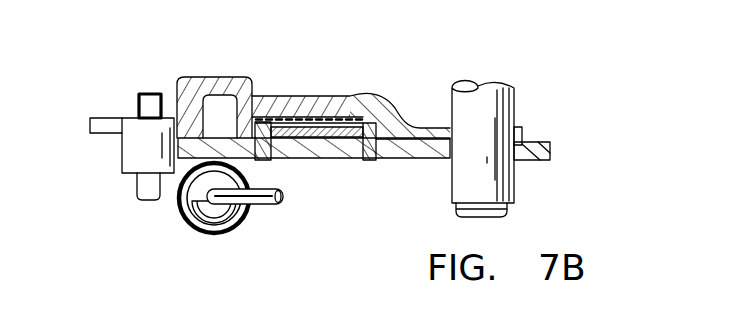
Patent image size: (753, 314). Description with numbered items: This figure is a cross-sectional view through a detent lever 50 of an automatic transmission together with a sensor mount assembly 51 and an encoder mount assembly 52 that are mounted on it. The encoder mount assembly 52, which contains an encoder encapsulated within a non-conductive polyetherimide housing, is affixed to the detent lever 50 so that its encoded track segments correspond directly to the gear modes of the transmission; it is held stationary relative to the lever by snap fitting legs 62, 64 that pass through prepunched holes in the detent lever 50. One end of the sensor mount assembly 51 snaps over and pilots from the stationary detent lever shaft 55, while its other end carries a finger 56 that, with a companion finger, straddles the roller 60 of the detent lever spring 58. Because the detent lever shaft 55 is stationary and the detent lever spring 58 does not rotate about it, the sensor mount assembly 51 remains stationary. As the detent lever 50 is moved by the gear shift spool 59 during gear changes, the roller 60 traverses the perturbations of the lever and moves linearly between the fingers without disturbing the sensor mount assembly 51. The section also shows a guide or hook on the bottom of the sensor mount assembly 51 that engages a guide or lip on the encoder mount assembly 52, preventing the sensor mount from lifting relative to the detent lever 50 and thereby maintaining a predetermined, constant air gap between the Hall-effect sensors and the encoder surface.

The detent lever 50 is at (528, 160).
The sensor mount assembly 51 is at (223, 76).
The encoder mount assembly 52 is at (327, 136).
The detent lever shaft 55 is at (512, 90).
The finger 56 is at (110, 118).
The detent lever spring 58 is at (160, 200).
The gear shift spool 59 is at (243, 222).
The roller 60 is at (122, 147).
The snap fitting leg 62 is at (270, 162).
The snap fitting leg 64 is at (368, 161).